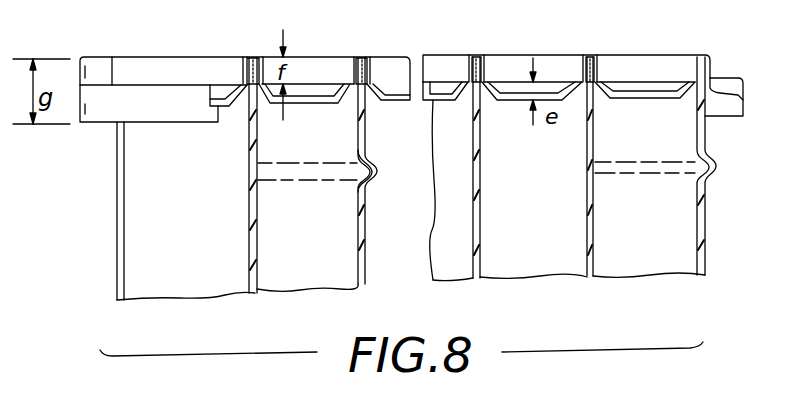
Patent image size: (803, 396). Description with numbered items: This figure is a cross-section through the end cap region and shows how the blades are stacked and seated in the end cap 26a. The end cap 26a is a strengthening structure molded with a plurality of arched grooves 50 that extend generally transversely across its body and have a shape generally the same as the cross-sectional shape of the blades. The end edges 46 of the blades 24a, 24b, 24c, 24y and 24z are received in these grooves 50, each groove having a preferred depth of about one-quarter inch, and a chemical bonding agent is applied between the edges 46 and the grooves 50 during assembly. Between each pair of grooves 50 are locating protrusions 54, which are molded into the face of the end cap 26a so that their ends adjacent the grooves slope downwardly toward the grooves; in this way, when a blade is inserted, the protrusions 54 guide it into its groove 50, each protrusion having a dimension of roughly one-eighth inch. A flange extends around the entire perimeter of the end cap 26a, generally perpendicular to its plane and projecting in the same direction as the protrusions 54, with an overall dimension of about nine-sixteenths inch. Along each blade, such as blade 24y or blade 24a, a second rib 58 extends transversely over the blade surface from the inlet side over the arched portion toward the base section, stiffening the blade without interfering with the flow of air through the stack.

The blade 24a is at (706, 246).
The blade 24b is at (594, 251).
The blade 24c is at (480, 255).
The blade 24y is at (366, 278).
The blade 24z is at (258, 255).
The end cap 26a is at (722, 78).
The end edge of blade 46 is at (470, 62).
The arched groove 50 is at (248, 68).
The protrusion 54 is at (332, 101).
The second rib 58 is at (375, 173).